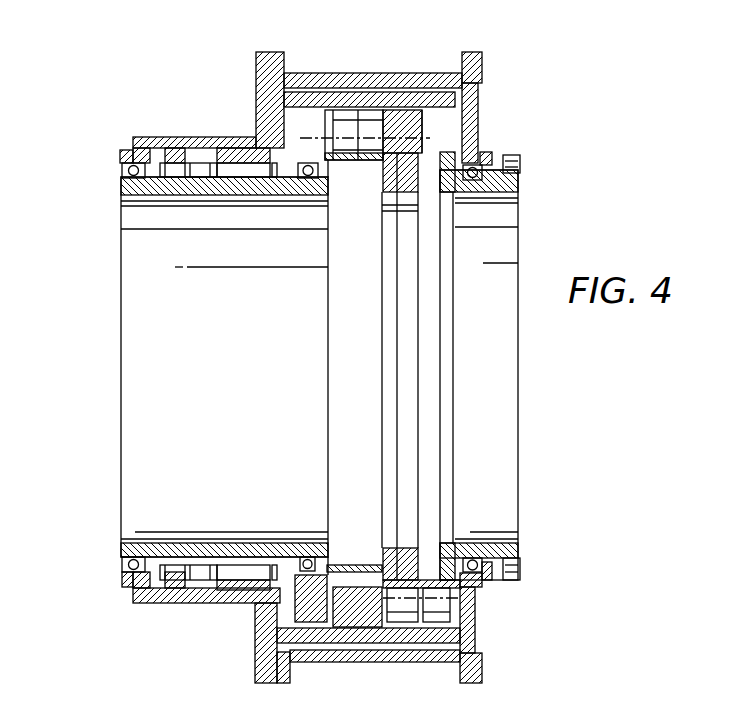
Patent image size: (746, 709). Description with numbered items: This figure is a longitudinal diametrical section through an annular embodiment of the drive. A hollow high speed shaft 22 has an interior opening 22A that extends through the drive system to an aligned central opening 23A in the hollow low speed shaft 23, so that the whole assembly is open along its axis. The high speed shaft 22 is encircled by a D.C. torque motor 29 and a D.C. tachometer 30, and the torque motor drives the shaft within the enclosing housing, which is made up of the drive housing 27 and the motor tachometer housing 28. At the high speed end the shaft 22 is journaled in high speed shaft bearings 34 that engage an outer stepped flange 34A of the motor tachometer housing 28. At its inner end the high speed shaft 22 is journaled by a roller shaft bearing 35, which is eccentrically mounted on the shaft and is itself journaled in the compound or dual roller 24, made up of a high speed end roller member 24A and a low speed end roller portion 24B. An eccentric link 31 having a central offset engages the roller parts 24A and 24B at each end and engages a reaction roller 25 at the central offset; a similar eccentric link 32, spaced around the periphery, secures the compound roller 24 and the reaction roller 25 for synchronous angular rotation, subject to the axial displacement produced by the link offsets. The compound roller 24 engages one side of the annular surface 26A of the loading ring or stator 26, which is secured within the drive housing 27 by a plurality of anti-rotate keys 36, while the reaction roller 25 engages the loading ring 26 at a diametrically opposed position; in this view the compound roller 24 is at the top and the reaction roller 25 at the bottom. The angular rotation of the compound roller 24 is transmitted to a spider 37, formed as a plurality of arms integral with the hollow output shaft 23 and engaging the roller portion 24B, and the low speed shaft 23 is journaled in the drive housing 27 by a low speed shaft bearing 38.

The hollow high speed shaft 22 is at (230, 543).
The interior opening 22A is at (135, 432).
The hollow low speed shaft 23 is at (522, 557).
The central opening 23A is at (502, 430).
The compound roller 24 is at (308, 624).
The high speed end roller member 24A is at (305, 595).
The low speed end roller portion 24B is at (413, 572).
The reaction roller 25 is at (364, 112).
The loading ring 26 is at (397, 635).
The annular surface 26A is at (394, 150).
The drive housing 27 is at (478, 128).
The motor tachometer housing 28 is at (257, 83).
The D.C. torque motor 29 is at (228, 158).
The D.C. tachometer 30 is at (172, 157).
The eccentric link 31 is at (428, 132).
The eccentric link 32 is at (452, 604).
The high speed shaft bearings 34 is at (123, 168).
The outer stepped flange 34A is at (123, 152).
The roller shaft bearing 35 is at (305, 179).
The anti-rotate keys 36 is at (286, 633).
The spider 37 is at (453, 550).
The low speed shaft bearing 38 is at (484, 160).